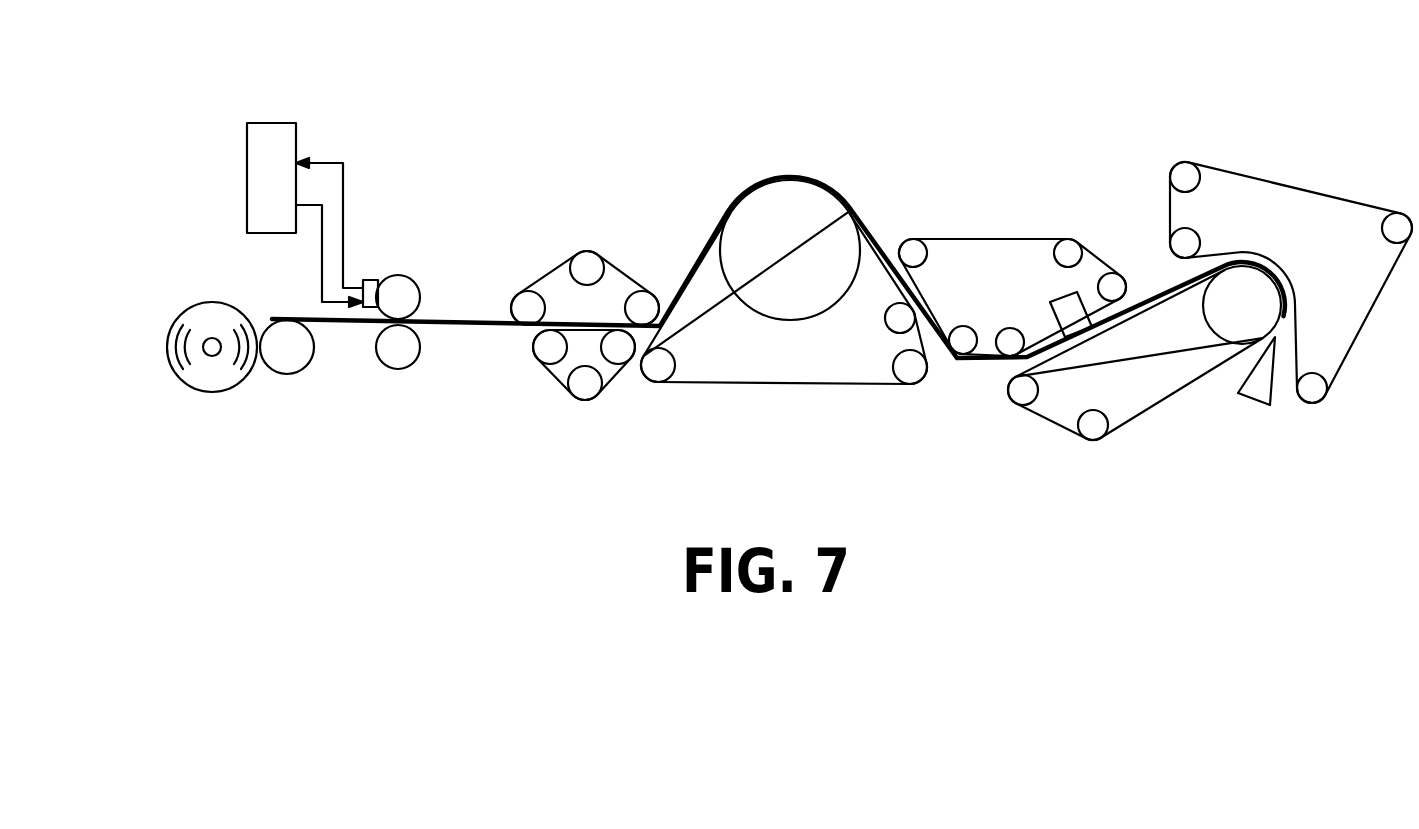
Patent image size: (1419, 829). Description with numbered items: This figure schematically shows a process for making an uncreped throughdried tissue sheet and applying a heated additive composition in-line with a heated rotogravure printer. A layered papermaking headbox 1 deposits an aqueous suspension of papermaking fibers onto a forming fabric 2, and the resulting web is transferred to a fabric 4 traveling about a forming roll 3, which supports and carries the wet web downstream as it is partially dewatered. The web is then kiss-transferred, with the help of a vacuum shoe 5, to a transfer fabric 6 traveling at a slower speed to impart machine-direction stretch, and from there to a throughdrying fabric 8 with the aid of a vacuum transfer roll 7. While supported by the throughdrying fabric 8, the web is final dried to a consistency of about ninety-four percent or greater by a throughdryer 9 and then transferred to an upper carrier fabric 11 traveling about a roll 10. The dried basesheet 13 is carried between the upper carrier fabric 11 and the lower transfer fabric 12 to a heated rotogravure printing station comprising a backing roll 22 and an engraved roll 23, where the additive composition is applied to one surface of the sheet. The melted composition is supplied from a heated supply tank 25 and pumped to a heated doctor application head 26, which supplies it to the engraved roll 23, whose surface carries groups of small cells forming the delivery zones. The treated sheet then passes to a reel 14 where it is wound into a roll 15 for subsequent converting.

The layered papermaking headbox 1 is at (1270, 403).
The forming fabric 2 is at (1317, 188).
The forming roll 3 is at (1200, 323).
The fabric 4 is at (1142, 415).
The vacuum shoe 5 is at (1053, 303).
The transfer fabric 6 is at (962, 238).
The vacuum transfer roll 7 is at (888, 317).
The throughdrying fabric 8 is at (797, 387).
The throughdryer 9 is at (778, 265).
The roll 10 is at (647, 307).
The upper carrier fabric 11 is at (553, 267).
The lower transfer fabric 12 is at (610, 383).
The dried basesheet 13 is at (472, 323).
The reel 14 is at (273, 372).
The roll 15 is at (173, 370).
The backing roll 22 is at (408, 368).
The engraved roll 23 is at (405, 276).
The heated supply tank 25 is at (247, 170).
The heated doctor application head 26 is at (372, 280).